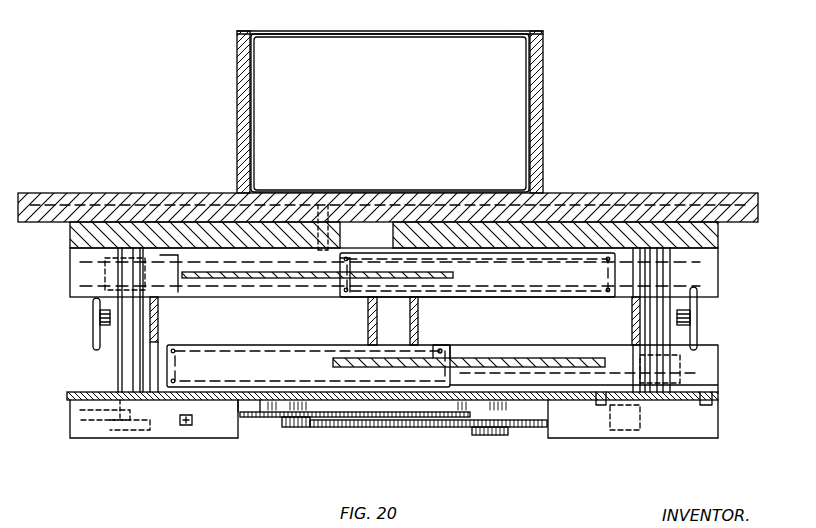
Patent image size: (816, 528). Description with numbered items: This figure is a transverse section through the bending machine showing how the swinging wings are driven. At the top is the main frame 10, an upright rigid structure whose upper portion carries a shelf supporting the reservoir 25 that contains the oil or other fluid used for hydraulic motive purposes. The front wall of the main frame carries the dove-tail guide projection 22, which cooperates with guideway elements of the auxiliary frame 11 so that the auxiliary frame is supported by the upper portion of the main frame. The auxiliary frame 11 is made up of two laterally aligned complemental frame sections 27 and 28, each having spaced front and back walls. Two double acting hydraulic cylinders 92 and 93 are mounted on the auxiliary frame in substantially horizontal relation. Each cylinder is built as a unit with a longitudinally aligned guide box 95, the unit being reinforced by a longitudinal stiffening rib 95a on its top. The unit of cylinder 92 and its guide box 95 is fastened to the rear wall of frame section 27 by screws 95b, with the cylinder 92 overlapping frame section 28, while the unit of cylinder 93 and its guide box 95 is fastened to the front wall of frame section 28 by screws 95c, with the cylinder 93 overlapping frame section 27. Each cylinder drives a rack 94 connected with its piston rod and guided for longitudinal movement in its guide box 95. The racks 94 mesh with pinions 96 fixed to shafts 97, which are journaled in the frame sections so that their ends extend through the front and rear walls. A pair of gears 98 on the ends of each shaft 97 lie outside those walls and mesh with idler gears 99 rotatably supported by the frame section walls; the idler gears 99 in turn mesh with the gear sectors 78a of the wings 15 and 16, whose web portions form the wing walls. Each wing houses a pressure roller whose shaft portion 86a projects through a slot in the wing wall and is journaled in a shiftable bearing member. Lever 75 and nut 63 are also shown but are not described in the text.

The main frame 10 is at (546, 92).
The reservoir 25 is at (447, 37).
The guide projection 22 is at (464, 212).
The screws 95b is at (314, 212).
The frame section 27 is at (70, 240).
The frame section 28 is at (720, 235).
The auxiliary frame 11 is at (690, 250).
The pinions 96 is at (70, 280).
The hydraulic cylinder 92 is at (530, 283).
The hydraulic cylinder 93 is at (290, 366).
The rack 94 is at (224, 282).
The guide box 95 is at (170, 272).
The longitudinal stiffening rib 95a is at (290, 278).
The screws 95c is at (706, 405).
The shafts 97 is at (125, 368).
The lever 75 is at (93, 310).
The nut 63 is at (108, 350).
The idler gears 99 is at (72, 434).
The gears 98 is at (105, 420).
The swinging wing 15 is at (258, 420).
The gear sector 78a is at (400, 430).
The shaft portion 86a is at (295, 430).
The swinging wing 16 is at (524, 430).